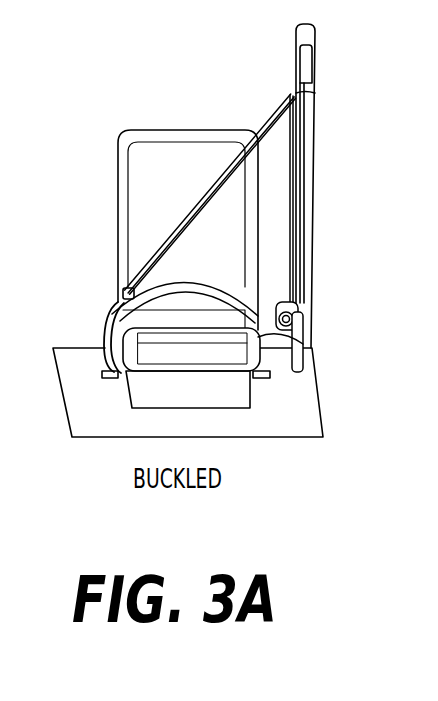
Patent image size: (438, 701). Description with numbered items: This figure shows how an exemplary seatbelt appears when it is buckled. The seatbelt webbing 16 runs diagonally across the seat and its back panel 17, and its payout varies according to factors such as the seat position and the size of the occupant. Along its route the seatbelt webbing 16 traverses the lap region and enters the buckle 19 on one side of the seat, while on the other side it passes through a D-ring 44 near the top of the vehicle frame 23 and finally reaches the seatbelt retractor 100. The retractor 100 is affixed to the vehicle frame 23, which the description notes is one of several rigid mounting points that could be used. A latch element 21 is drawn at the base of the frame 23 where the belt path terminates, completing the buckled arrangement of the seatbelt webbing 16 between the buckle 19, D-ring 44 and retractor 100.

The seatbelt webbing 16 is at (292, 98).
The child seat back 17 is at (117, 165).
The buckle 19 is at (119, 298).
The buckle 21 is at (303, 344).
The vehicle frame 23 is at (316, 167).
The D-ring 44 is at (308, 92).
The seatbelt retractor 100 is at (298, 315).